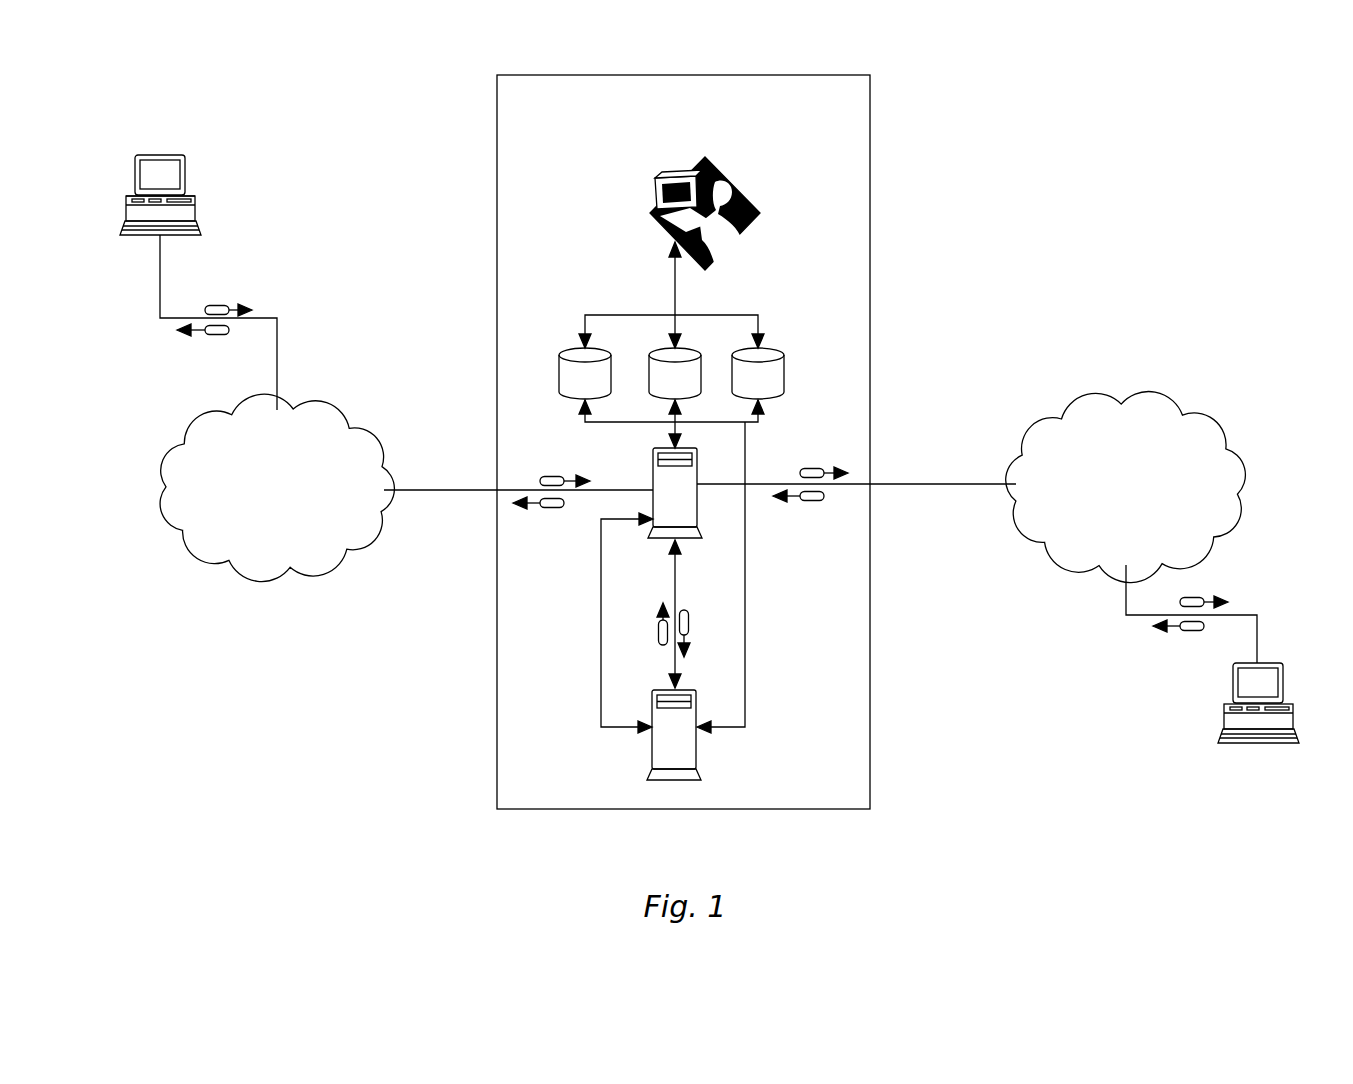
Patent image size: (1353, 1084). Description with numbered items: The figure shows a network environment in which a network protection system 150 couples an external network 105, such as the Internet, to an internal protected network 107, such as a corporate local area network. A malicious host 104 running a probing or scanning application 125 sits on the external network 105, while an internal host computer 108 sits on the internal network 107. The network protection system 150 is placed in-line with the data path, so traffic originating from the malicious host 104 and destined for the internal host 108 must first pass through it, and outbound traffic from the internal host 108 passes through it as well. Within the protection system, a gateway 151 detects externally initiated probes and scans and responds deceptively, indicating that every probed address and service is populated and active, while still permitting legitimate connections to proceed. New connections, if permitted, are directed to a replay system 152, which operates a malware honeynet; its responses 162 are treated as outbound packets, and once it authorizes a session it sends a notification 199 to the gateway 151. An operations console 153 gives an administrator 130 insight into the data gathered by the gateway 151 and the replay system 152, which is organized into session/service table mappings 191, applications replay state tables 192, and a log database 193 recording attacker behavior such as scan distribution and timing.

The malicious host 104 is at (186, 190).
The probing or scanning application 125 is at (200, 223).
The external network 105 is at (277, 487).
The internal protected network 107 is at (1126, 487).
The internal host computer 108 is at (1218, 735).
The administrator 130 is at (752, 232).
The network protection system 150 is at (683, 442).
The gateway 151 is at (675, 493).
The replay system 152 is at (674, 735).
The operations console 153 is at (668, 180).
The replay system response 162 is at (658, 633).
The session/service table mappings 191 is at (585, 373).
The applications replay state tables 192 is at (675, 373).
The log database 193 is at (758, 373).
The notification 199 is at (600, 690).